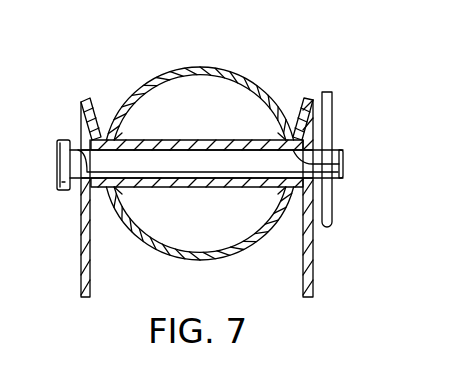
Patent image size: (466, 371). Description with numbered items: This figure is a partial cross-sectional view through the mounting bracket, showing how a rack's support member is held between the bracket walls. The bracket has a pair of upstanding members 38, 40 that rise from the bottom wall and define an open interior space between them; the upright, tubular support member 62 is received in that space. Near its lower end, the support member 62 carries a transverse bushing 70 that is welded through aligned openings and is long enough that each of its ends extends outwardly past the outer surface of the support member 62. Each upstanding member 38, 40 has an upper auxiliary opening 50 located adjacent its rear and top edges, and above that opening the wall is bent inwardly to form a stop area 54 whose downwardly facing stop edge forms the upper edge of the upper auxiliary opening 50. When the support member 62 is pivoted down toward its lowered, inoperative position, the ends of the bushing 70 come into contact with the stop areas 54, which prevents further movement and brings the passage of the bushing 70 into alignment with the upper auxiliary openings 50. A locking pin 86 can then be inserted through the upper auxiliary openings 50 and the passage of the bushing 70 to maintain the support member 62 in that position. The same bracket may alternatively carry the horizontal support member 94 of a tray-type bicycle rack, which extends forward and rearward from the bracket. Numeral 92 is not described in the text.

The upstanding member 38 is at (78, 218).
The upstanding member 40 is at (313, 255).
The upper auxiliary opening 50 is at (57, 161).
The stop area 54 is at (101, 130).
The support member 62 is at (193, 135).
The transverse bushing 70 is at (238, 188).
The locking pin 86 is at (203, 160).
The clip 92 is at (333, 197).
The support member 94 is at (197, 63).